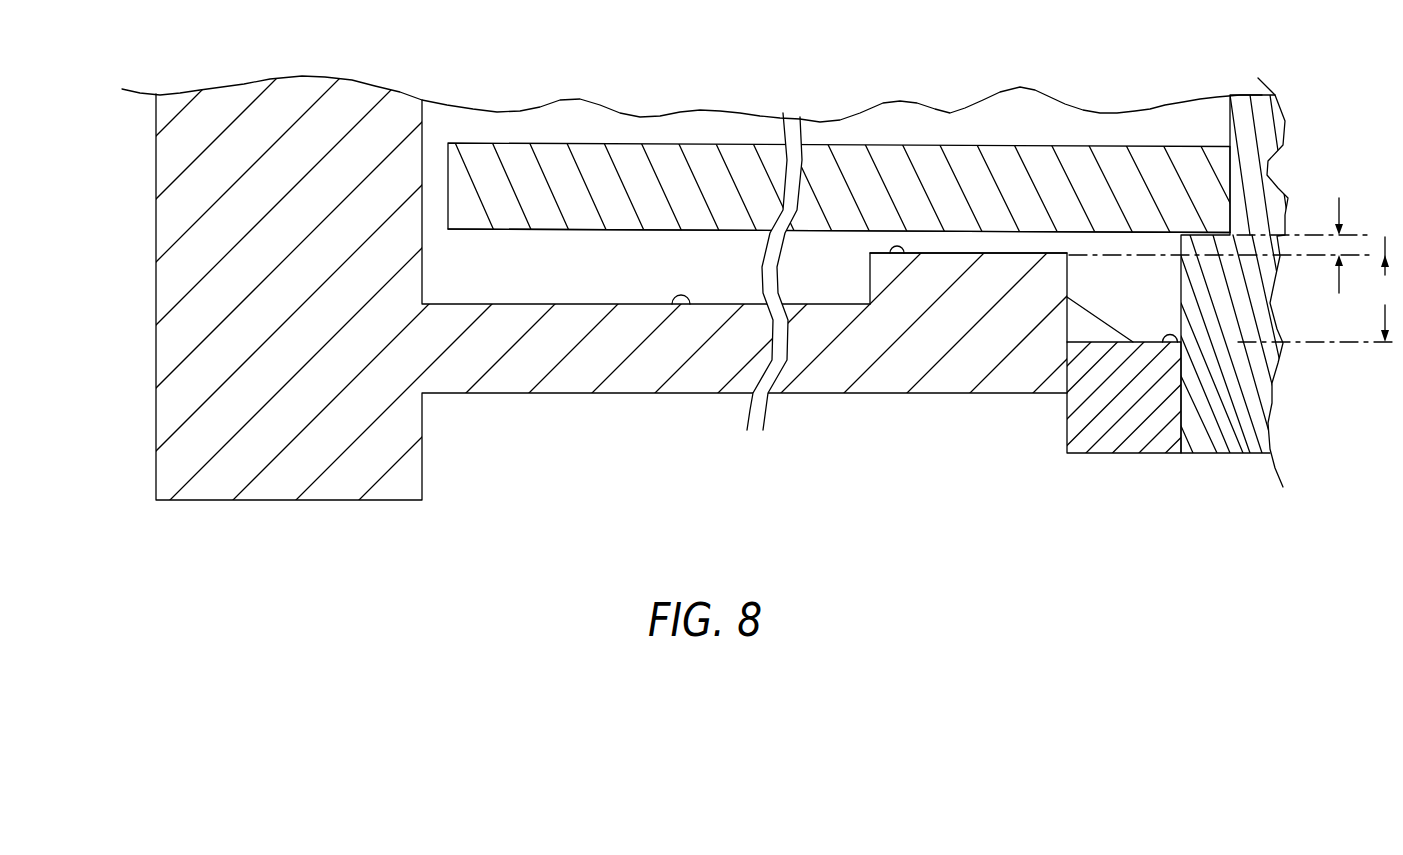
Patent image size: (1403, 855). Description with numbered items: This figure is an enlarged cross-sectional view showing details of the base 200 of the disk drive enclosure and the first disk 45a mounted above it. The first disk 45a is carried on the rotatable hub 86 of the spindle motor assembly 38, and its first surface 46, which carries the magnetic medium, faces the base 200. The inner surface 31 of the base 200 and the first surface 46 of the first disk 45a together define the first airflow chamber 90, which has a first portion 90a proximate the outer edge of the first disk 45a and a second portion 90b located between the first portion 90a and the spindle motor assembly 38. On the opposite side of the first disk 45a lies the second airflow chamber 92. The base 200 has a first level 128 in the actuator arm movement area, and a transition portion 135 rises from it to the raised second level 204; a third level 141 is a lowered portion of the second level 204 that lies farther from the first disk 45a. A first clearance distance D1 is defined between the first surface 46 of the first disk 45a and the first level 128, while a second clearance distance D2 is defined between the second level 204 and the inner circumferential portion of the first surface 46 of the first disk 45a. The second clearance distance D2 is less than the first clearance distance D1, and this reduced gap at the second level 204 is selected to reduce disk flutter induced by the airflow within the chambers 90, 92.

The base 200 is at (156, 309).
The first disk 45a is at (445, 190).
The first surface 46 is at (572, 230).
The second airflow chamber 92 is at (708, 112).
The rotatable hub 86 is at (1245, 95).
The spindle motor assembly 38 is at (1105, 453).
The first airflow chamber 90 is at (1055, 495).
The first portion of the first airflow chamber 90a is at (1025, 250).
The second portion of the first airflow chamber 90b is at (1112, 295).
The transition portion 135 is at (1116, 330).
The second level 204 is at (903, 254).
The third level 141 is at (690, 304).
The inner surface 31 is at (1151, 348).
The first level 128 is at (1174, 348).
The first clearance distance D1 is at (1317, 289).
The second clearance distance D2 is at (1219, 245).